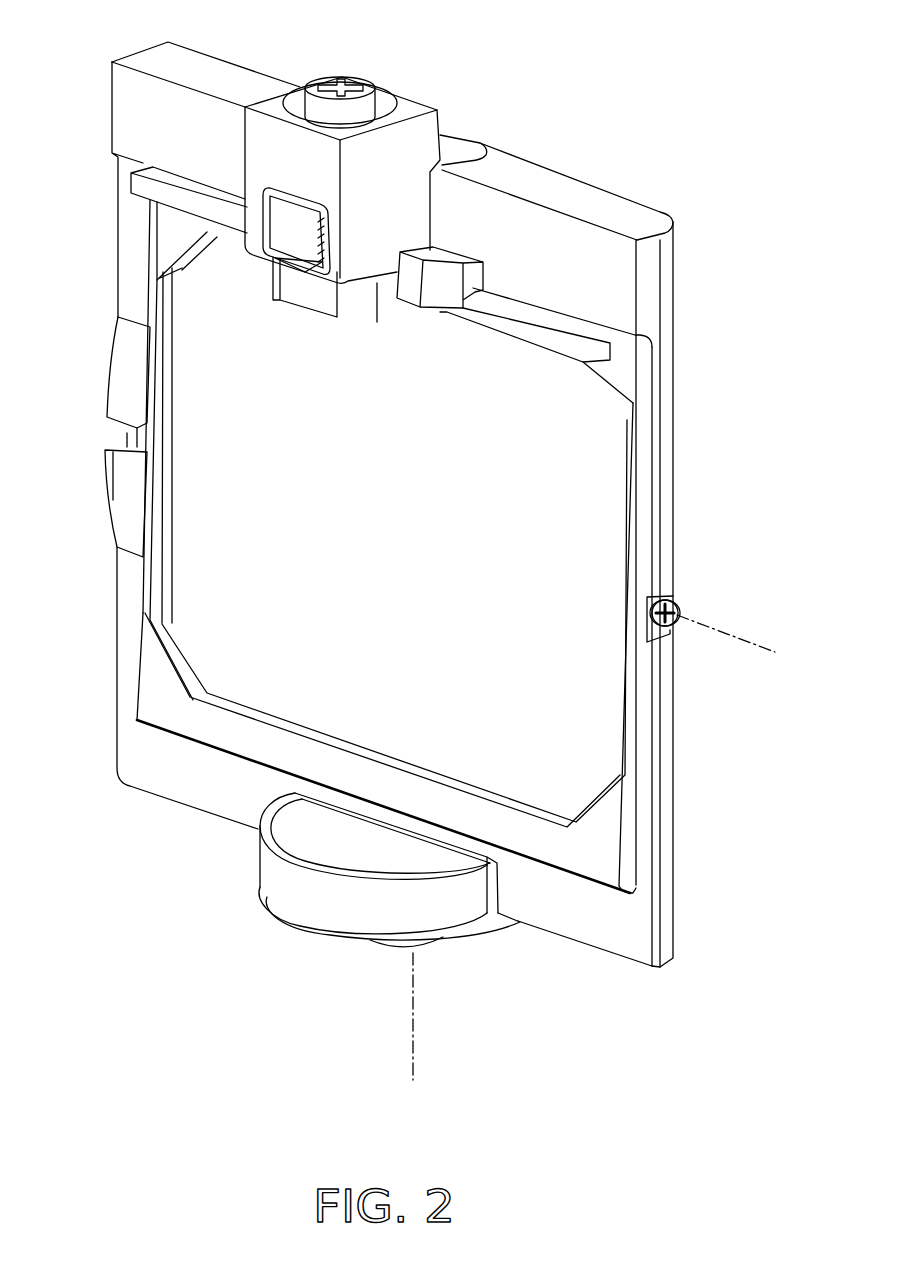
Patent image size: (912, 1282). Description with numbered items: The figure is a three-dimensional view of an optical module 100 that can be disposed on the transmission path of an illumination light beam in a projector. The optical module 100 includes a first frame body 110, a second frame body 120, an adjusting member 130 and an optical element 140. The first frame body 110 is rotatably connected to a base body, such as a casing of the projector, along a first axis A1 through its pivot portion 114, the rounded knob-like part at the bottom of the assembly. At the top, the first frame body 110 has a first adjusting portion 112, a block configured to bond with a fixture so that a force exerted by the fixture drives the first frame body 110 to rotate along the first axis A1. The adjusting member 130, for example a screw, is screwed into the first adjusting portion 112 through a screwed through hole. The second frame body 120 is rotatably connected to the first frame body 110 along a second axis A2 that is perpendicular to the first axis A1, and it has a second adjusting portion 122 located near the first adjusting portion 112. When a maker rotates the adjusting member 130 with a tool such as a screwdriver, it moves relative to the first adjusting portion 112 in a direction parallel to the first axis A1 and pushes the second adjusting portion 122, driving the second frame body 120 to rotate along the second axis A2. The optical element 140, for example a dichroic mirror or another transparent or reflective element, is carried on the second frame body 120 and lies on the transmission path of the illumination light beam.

The optical module 100 is at (429, 549).
The first frame body 110 is at (562, 255).
The first adjusting portion 112 is at (413, 150).
The pivot portion 114 is at (328, 900).
The second frame body 120 is at (595, 834).
The second adjusting portion 122 is at (327, 262).
The adjusting member 130 is at (326, 80).
The optical element 140 is at (575, 522).
The first axis A1 is at (415, 1018).
The second axis A2 is at (745, 642).